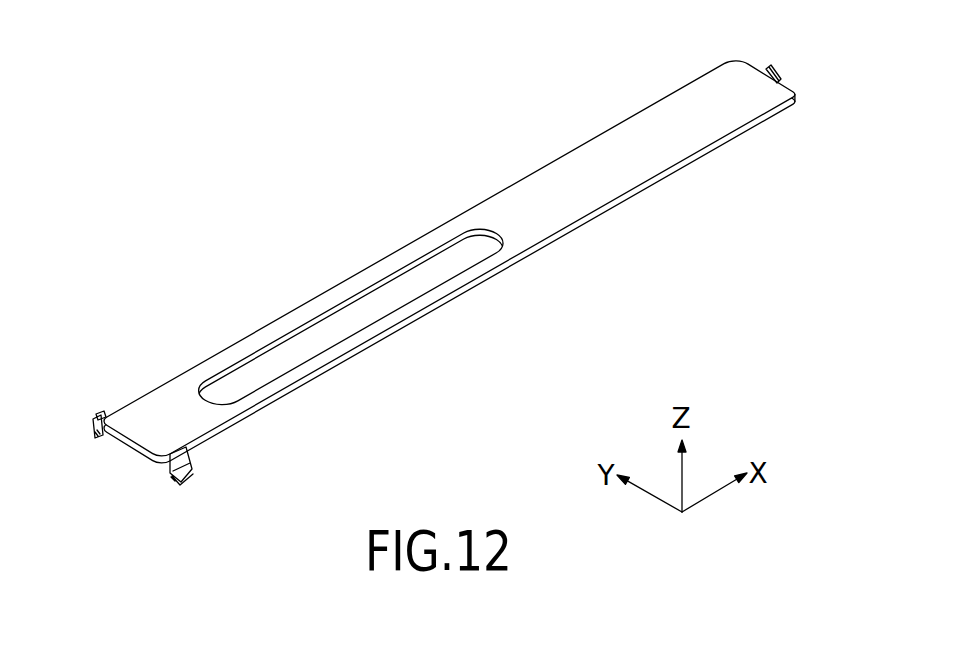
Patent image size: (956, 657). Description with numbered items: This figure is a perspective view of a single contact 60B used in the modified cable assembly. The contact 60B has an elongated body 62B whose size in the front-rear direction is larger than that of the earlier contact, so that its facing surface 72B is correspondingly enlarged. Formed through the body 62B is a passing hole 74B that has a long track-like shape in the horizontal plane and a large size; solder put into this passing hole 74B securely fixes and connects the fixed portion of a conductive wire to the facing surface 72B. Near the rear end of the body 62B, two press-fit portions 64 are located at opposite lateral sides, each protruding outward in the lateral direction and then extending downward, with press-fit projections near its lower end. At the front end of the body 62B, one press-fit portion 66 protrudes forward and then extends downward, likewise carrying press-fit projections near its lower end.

The contact 60B is at (248, 75).
The body 62B is at (502, 208).
The press-fit portion 64 is at (100, 420).
The press-fit portion 66 is at (775, 70).
The facing surface 72B is at (524, 259).
The passing hole 74B is at (378, 298).